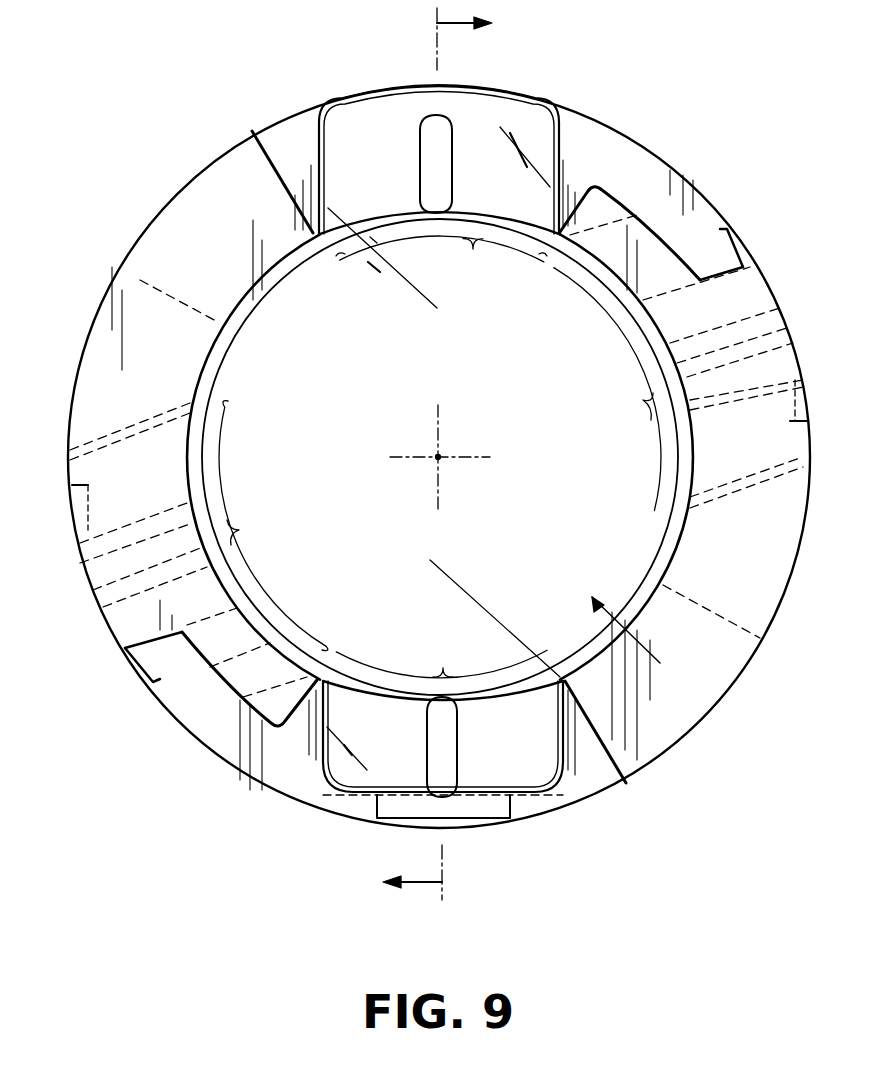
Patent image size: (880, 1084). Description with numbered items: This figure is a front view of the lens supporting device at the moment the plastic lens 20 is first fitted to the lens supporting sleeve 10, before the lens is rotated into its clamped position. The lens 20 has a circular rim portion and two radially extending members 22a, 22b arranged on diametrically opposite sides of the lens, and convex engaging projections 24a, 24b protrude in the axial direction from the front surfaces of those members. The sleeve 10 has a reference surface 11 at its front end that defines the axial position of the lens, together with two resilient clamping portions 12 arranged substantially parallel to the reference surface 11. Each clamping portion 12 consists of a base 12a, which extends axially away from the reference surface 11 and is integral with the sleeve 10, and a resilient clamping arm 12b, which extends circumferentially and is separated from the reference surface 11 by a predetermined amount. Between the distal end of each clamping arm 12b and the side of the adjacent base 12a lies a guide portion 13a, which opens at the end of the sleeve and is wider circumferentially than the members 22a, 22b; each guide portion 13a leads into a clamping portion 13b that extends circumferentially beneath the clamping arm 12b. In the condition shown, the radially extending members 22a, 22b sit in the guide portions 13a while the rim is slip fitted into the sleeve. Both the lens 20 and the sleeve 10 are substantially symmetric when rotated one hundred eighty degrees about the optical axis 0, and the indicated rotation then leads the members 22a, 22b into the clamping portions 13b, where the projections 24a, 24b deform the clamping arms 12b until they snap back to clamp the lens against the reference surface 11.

The lens supporting sleeve 10 is at (222, 133).
The reference surface 11 is at (297, 118).
The resilient clamping portion 12 is at (13, 463).
The base 12a is at (148, 243).
The resilient clamping arm 12b is at (100, 483).
The guide portion 13a is at (441, 457).
The clamping portion 13b is at (440, 459).
The plastic lens 20 is at (660, 658).
The radially extending member 22a is at (517, 117).
The radially extending member 22b is at (370, 777).
The convex engaging projection 24a is at (427, 130).
The convex engaging projection 24b is at (450, 767).
The optical axis 0 is at (437, 456).